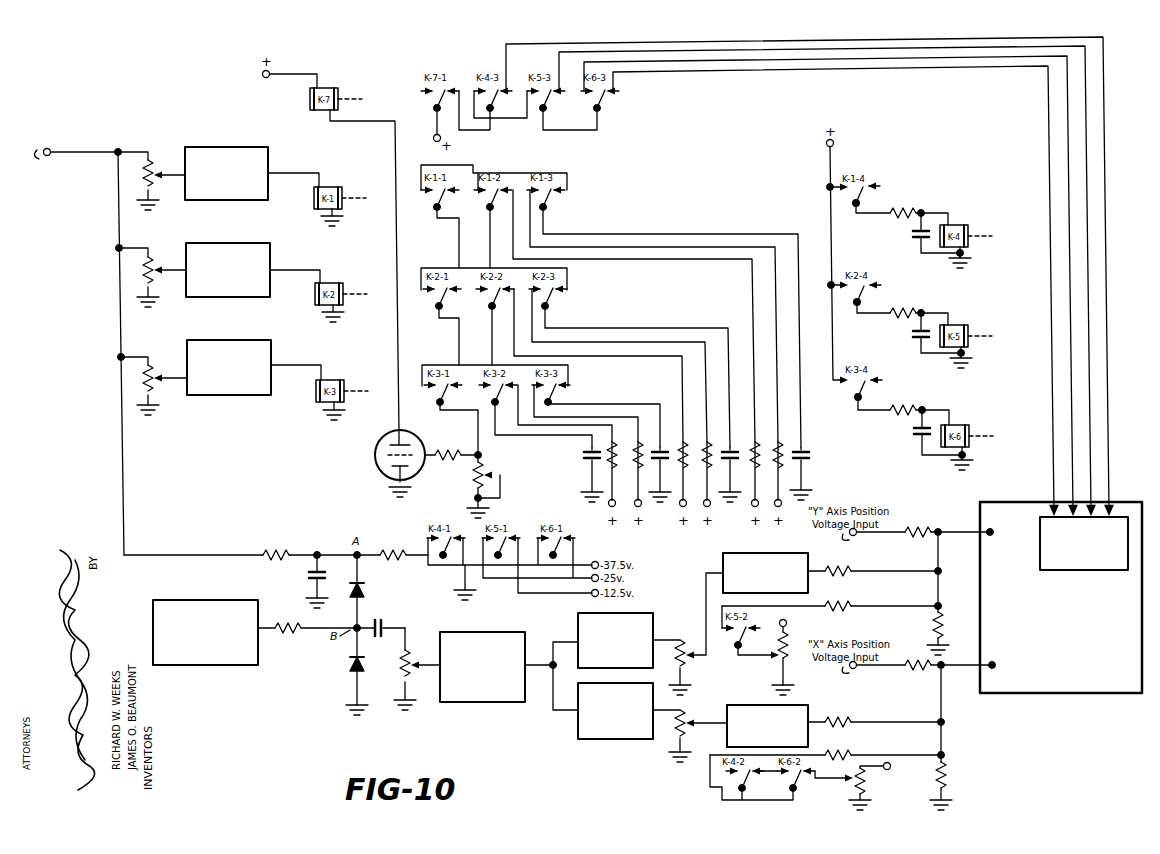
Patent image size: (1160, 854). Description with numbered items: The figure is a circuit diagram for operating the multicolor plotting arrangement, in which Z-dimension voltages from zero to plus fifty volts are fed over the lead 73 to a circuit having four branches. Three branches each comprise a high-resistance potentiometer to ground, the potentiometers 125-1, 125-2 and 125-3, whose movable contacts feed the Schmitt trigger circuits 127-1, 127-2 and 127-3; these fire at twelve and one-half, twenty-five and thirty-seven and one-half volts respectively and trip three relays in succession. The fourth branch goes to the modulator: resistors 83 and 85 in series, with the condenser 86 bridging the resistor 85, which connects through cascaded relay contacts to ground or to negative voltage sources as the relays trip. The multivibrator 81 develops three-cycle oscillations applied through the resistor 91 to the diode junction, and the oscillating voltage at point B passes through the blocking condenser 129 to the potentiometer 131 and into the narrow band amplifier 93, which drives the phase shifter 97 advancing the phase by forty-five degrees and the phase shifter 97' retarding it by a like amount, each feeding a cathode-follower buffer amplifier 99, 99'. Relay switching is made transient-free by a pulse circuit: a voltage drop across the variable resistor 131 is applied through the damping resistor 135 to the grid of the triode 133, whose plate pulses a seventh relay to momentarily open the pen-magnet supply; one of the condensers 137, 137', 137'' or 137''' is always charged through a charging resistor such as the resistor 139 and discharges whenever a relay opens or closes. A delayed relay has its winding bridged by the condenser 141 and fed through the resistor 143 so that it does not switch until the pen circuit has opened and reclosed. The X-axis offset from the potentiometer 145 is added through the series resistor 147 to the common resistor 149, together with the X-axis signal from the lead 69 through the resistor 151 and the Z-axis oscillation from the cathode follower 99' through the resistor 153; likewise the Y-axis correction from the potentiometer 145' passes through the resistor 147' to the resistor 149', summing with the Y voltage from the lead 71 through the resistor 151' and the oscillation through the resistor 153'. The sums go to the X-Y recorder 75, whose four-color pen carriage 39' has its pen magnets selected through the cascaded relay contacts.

The lead 73 is at (62, 165).
The potentiometer 125-1 is at (140, 173).
The potentiometer 125-2 is at (140, 268).
The potentiometer 125-3 is at (140, 360).
The Schmitt trigger circuit 127-1 is at (243, 146).
The Schmitt trigger circuit 127-2 is at (245, 242).
The Schmitt trigger circuit 127-3 is at (248, 338).
The triode 133 is at (376, 470).
The damping resistor 135 is at (447, 443).
The potentiometer / variable resistor 131 is at (470, 478).
The condenser 137 is at (814, 472).
The condenser 137' is at (728, 493).
The condenser 137'' is at (657, 442).
The condenser 137''' is at (569, 474).
The charging resistor 139 is at (762, 510).
The resistor 83 is at (285, 540).
The condenser 86 is at (313, 576).
The resistor 85 is at (378, 570).
The blocking condenser 129 is at (378, 622).
The resistor 91 is at (282, 640).
The multivibrator 81 is at (218, 665).
The narrow band amplifier 93 is at (490, 629).
The phase shifter 97 is at (627, 634).
The phase shifter 97' is at (615, 726).
The cathode-follower buffer amplifier 99 is at (744, 573).
The cathode-follower buffer amplifier 99' is at (755, 717).
The resistor 143 is at (896, 207).
The condenser 141 is at (907, 234).
The potentiometer 145 is at (851, 787).
The potentiometer 145' is at (768, 655).
The lead 71 is at (876, 543).
The lead 69 is at (884, 680).
The resistor 151 is at (922, 679).
The resistor 151' is at (916, 543).
The series resistor 153 is at (874, 712).
The series resistor 153' is at (873, 579).
The series resistor 147 is at (825, 746).
The series resistor 147' is at (830, 614).
The common resistor 149 is at (953, 737).
The common resistor 149' is at (949, 593).
The X-Y recorder 75 is at (1050, 693).
The pen carriage 39' is at (1063, 543).